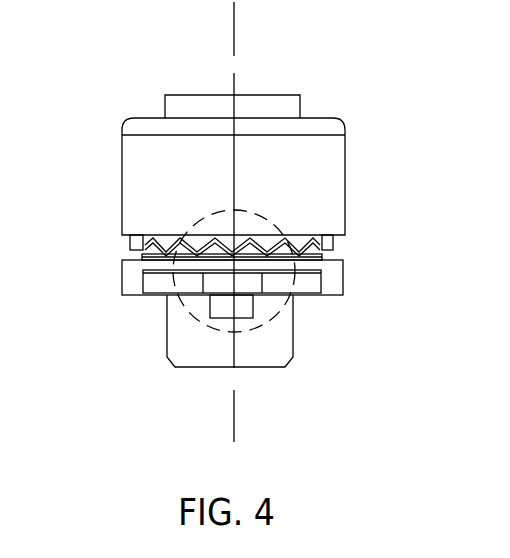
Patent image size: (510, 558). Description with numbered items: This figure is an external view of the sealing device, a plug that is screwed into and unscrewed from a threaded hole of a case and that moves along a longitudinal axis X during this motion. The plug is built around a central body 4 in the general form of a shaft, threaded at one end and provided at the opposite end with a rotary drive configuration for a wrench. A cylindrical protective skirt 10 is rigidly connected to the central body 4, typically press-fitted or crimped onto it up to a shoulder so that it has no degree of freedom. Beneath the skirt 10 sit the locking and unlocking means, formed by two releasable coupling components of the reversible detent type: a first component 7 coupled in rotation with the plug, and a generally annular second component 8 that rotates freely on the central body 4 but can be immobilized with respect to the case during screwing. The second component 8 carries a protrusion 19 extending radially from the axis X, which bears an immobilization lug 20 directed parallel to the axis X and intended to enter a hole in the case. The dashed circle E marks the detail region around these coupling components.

The longitudinal axis X is at (233, 52).
The central body 4 is at (183, 108).
The cylindrical protective skirt 10 is at (145, 168).
The first component 7 is at (113, 247).
The second component 8 is at (122, 277).
The protrusion 19 is at (143, 287).
The immobilization lug 20 is at (255, 308).
The detail region E is at (286, 216).